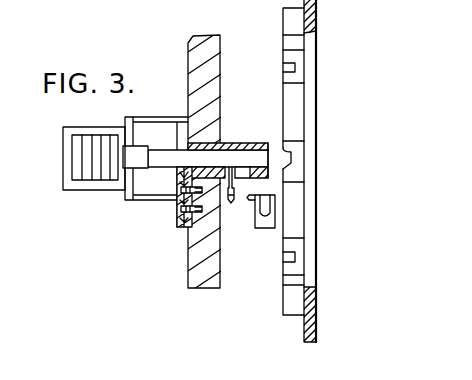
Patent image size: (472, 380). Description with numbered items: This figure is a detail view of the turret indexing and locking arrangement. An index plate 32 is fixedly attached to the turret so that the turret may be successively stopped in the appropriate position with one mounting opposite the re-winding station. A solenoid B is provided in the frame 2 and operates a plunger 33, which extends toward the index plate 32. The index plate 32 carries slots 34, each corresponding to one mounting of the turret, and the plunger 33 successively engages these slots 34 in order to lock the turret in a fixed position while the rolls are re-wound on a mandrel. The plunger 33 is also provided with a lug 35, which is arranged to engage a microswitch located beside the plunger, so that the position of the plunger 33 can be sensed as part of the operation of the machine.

The frame 2 is at (195, 255).
The index plate 32 is at (312, 115).
The plunger 33 is at (231, 143).
The slots 34 is at (293, 252).
The lug 35 is at (231, 198).
The solenoid B is at (77, 150).